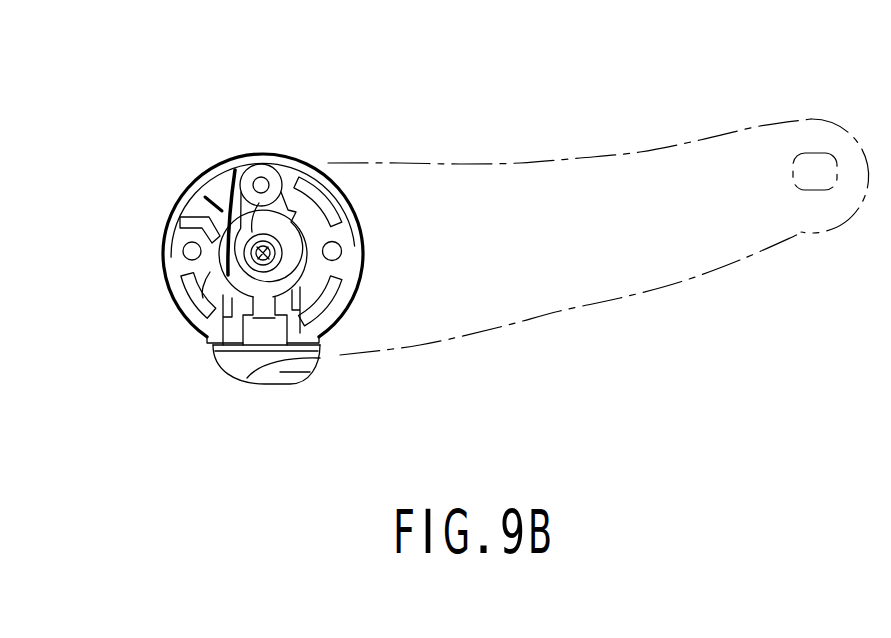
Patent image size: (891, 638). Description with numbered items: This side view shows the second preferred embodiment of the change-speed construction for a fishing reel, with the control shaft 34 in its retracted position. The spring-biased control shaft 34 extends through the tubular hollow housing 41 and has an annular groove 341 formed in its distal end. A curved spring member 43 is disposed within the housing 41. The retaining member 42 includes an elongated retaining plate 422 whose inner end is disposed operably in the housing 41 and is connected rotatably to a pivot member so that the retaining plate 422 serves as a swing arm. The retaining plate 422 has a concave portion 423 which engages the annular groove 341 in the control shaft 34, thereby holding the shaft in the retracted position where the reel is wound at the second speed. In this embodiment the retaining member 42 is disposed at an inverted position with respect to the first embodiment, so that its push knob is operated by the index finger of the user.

The control shaft 34 is at (283, 240).
The annular groove 341 is at (277, 268).
The tubular hollow housing 41 is at (343, 205).
The retaining member 42 is at (303, 370).
The curved spring member 43 is at (190, 212).
The retaining plate 422 is at (217, 177).
The concave portion 423 is at (203, 281).